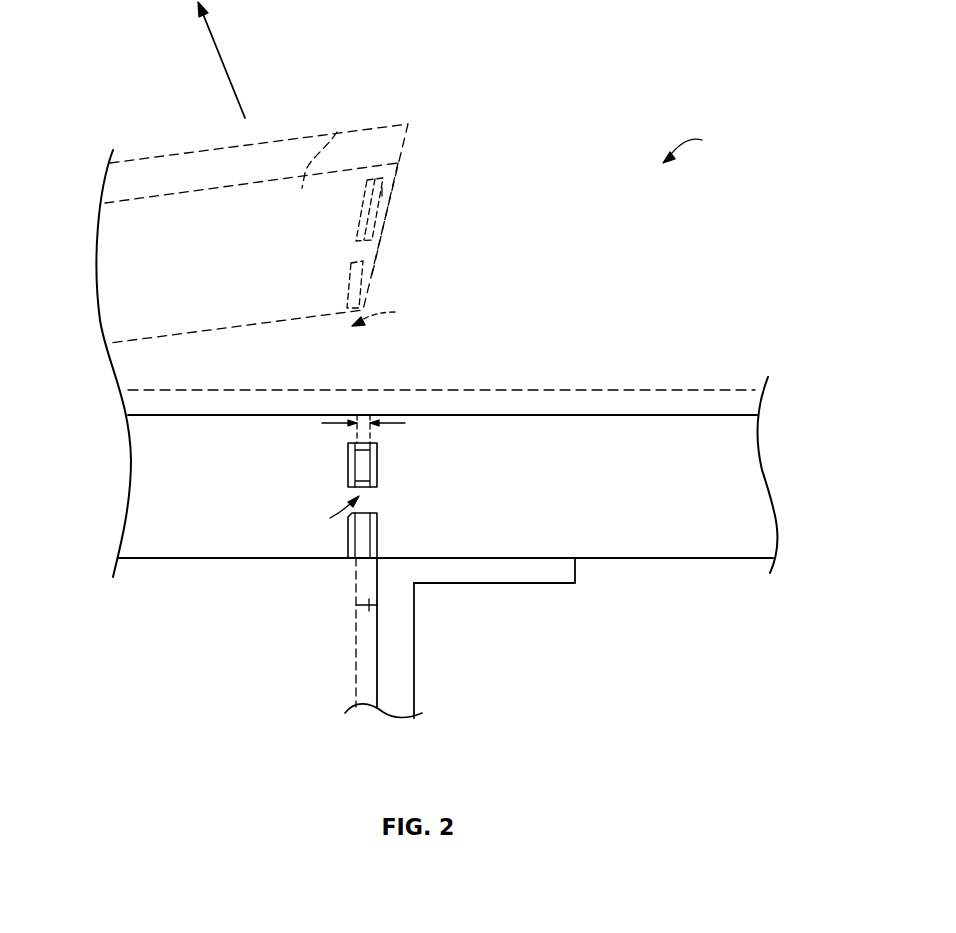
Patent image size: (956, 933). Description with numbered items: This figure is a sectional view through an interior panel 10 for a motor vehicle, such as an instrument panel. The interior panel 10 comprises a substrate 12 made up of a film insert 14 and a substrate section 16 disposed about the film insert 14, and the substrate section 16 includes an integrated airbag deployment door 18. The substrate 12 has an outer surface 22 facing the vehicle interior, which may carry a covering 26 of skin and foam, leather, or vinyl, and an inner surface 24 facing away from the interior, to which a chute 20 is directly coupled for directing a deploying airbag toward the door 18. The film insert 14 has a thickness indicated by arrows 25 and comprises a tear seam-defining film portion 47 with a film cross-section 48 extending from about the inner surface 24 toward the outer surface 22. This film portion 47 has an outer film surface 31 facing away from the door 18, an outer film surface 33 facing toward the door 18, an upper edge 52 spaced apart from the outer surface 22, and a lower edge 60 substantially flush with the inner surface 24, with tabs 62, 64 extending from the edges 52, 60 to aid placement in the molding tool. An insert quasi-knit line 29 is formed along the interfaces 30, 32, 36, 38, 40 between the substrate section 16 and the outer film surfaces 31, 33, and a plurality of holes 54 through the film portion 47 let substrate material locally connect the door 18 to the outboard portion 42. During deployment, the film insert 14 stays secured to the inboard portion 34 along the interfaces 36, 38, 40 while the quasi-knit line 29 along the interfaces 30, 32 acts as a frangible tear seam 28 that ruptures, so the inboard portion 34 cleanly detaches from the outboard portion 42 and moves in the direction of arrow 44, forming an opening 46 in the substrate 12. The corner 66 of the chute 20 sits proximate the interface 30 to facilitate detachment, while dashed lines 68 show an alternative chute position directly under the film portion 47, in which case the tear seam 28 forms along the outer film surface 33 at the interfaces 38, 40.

The interior panel 10 is at (699, 146).
The substrate 12 is at (748, 473).
The film insert 14 is at (383, 222).
The substrate section 16 is at (170, 540).
The integrated airbag deployment door 18 is at (337, 132).
The chute 20 is at (395, 668).
The outer surface 22 is at (578, 418).
The inner surface 24 is at (675, 560).
The arrows 25 is at (322, 423).
The covering 26 is at (498, 390).
The frangible tear seam 28 is at (382, 486).
The insert quasi-knit line 29 is at (378, 471).
The interface 30 is at (377, 523).
The outer film surface 31 is at (390, 195).
The interface 32 is at (377, 443).
The outer film surface 33 is at (360, 225).
The inboard portion 34 is at (243, 203).
The interface 36 is at (352, 448).
The interface 38 is at (353, 468).
The interface 40 is at (347, 549).
The outboard portion 42 is at (643, 422).
The single headed arrow 44 is at (220, 40).
The opening 46 is at (387, 311).
The tear seam-defining film portion 47 is at (372, 513).
The film cross-section 48 is at (363, 477).
The edge 52 is at (358, 445).
The holes 54 is at (328, 513).
The edge 60 is at (362, 561).
The tab 62 is at (357, 417).
The tab 64 is at (366, 618).
The corner 66 is at (358, 560).
The dashed lines 68 is at (355, 687).